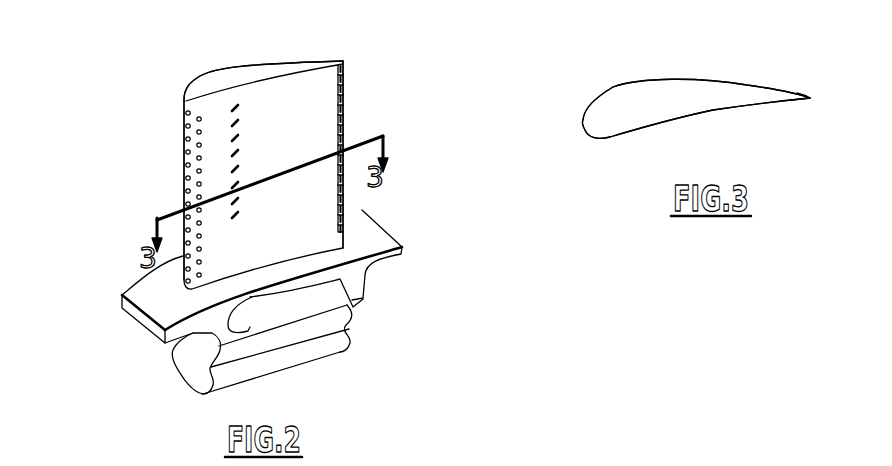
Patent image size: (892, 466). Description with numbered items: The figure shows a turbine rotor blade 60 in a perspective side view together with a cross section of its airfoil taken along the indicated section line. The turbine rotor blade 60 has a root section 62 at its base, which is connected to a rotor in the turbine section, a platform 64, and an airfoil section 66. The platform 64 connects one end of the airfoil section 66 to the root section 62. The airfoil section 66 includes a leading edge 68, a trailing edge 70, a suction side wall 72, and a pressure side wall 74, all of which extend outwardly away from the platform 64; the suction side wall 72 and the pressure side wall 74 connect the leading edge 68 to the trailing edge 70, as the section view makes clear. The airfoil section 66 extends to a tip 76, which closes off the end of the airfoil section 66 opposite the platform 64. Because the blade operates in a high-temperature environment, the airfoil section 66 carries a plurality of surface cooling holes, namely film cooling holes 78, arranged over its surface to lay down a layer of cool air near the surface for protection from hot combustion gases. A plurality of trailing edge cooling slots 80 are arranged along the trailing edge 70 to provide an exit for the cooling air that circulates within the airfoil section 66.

In FIG. 2, the turbine rotor blade 60 is at (140, 80).
In FIG. 2, the root section 62 is at (185, 368).
In FIG. 2, the platform 64 is at (402, 250).
In FIG. 2, the airfoil section 66 is at (298, 125).
In FIG. 3, the airfoil section 66 is at (658, 117).
In FIG. 2, the leading edge 68 is at (183, 152).
In FIG. 3, the leading edge 68 is at (583, 133).
In FIG. 2, the trailing edge 70 is at (345, 82).
In FIG. 3, the trailing edge 70 is at (812, 101).
In FIG. 2, the suction side wall 72 is at (231, 67).
In FIG. 3, the suction side wall 72 is at (753, 83).
In FIG. 2, the pressure side wall 74 is at (308, 135).
In FIG. 3, the pressure side wall 74 is at (760, 105).
In FIG. 2, the tip 76 is at (258, 78).
In FIG. 2, the film cooling holes 78 is at (187, 129).
In FIG. 2, the trailing edge cooling slots 80 is at (338, 230).